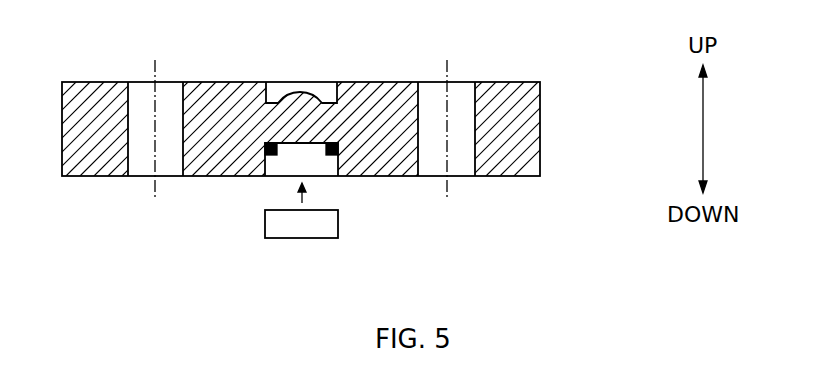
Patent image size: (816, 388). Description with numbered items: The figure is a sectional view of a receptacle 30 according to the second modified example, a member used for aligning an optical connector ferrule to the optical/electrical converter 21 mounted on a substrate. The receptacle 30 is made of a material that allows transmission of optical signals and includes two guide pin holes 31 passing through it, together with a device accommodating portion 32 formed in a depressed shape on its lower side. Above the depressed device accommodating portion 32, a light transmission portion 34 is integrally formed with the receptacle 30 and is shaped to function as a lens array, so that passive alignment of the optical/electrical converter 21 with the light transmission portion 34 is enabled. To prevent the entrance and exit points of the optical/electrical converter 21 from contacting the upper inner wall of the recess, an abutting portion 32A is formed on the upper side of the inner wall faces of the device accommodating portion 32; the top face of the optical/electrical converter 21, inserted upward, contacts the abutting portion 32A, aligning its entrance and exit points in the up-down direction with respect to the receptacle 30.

The receptacle 30 is at (540, 130).
The guide pin hole 31 is at (141, 93).
The light transmission portion 34 is at (282, 115).
The device accommodating portion 32 is at (267, 170).
The abutting portion 32A is at (332, 150).
The optical/electrical converter 21 is at (333, 223).